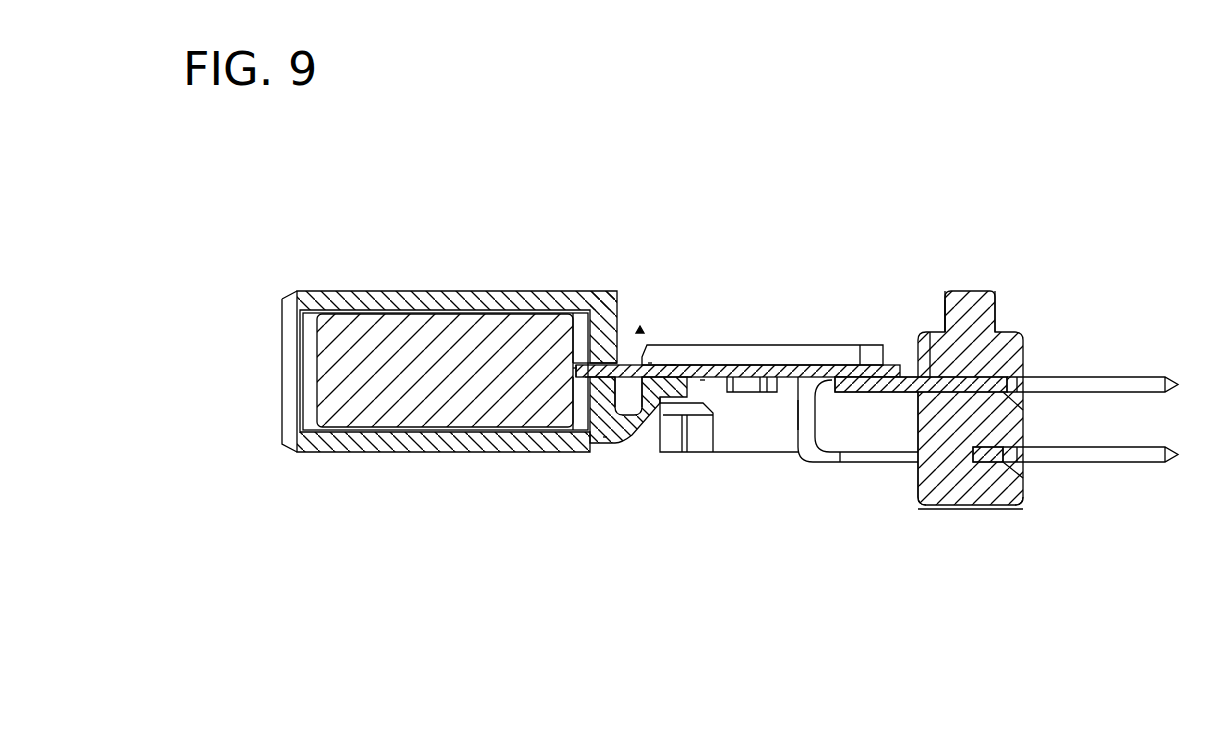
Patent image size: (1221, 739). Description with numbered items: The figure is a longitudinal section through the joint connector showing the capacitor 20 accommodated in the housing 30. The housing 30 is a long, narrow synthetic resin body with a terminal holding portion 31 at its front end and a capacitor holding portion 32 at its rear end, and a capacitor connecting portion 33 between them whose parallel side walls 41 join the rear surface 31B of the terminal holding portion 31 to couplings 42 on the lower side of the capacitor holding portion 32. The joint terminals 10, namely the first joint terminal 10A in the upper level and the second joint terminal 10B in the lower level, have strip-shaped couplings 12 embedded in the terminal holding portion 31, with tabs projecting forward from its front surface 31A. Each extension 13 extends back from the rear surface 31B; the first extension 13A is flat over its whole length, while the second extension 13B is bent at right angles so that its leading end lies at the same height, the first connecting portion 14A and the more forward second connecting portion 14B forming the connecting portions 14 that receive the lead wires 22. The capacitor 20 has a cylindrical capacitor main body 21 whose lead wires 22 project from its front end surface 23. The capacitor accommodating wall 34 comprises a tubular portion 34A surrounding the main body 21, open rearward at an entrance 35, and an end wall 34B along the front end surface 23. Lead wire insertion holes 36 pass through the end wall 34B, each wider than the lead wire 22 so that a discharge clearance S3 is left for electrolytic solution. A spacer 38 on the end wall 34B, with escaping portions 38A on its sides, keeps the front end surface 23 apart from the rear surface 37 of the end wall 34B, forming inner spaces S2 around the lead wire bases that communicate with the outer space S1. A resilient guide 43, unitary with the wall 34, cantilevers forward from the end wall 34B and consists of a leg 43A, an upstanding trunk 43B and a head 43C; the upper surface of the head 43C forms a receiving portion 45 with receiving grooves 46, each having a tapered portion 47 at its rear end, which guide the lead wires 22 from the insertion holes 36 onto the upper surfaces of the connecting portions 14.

The joint terminal 10 is at (1086, 323).
The first joint terminal 10A is at (1120, 377).
The second joint terminal 10B is at (1155, 447).
The coupling 12 is at (990, 382).
The extension 13 is at (921, 288).
The first extension 13A is at (897, 366).
The second extension 13B is at (957, 278).
The connecting portion 14 is at (852, 504).
The first connecting portion 14A is at (840, 393).
The second connecting portion 14B is at (797, 392).
The capacitor 20 is at (413, 363).
The capacitor main body 21 is at (389, 328).
The lead wire 22 is at (787, 363).
The front end surface 23 is at (578, 372).
The housing 30 is at (965, 431).
The terminal holding portion 31 is at (1018, 490).
The front surface 31A is at (1035, 495).
The rear surface 31B is at (905, 445).
The capacitor holding portion 32 is at (432, 298).
The capacitor connecting portion 33 is at (820, 348).
The capacitor accommodating wall 34 is at (564, 241).
The tubular portion 34A is at (575, 340).
The end wall 34B is at (617, 360).
The entrance 35 is at (283, 420).
The lead wire insertion hole 36 is at (575, 395).
The rear surface 37 is at (587, 380).
The spacer 38 is at (522, 316).
The escaping portion 38A is at (577, 370).
The side wall 41 is at (852, 348).
The coupling 42 is at (677, 430).
The guide 43 is at (655, 509).
The leg 43A is at (633, 433).
The trunk 43B is at (657, 417).
The head 43C is at (675, 387).
The receiving portion 45 is at (703, 380).
The receiving groove 46 is at (690, 378).
The tapered portion 47 is at (672, 372).
The outer space S1 is at (650, 362).
The inner space S2 is at (607, 437).
The discharge clearance S3 is at (640, 333).